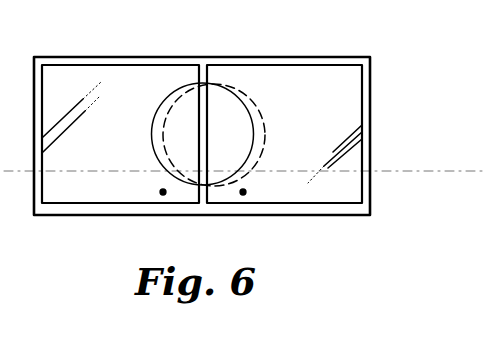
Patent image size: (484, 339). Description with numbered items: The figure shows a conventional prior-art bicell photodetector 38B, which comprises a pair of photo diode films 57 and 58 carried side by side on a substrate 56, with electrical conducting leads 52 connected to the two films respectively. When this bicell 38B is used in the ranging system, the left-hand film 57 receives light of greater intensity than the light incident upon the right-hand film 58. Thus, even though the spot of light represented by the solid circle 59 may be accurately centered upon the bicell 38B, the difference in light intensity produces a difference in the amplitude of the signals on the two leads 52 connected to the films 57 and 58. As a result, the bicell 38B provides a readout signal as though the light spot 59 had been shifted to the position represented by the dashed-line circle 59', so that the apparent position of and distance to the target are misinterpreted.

The bicell photodetector 38B is at (331, 26).
The substrate 56 is at (123, 58).
The left-hand photo diode film 57 is at (87, 82).
The right-hand photo diode film 58 is at (342, 97).
The electrical conducting leads 52 is at (243, 192).
The light spot 59 is at (124, 216).
The apparent shifted light spot position 59' is at (280, 212).